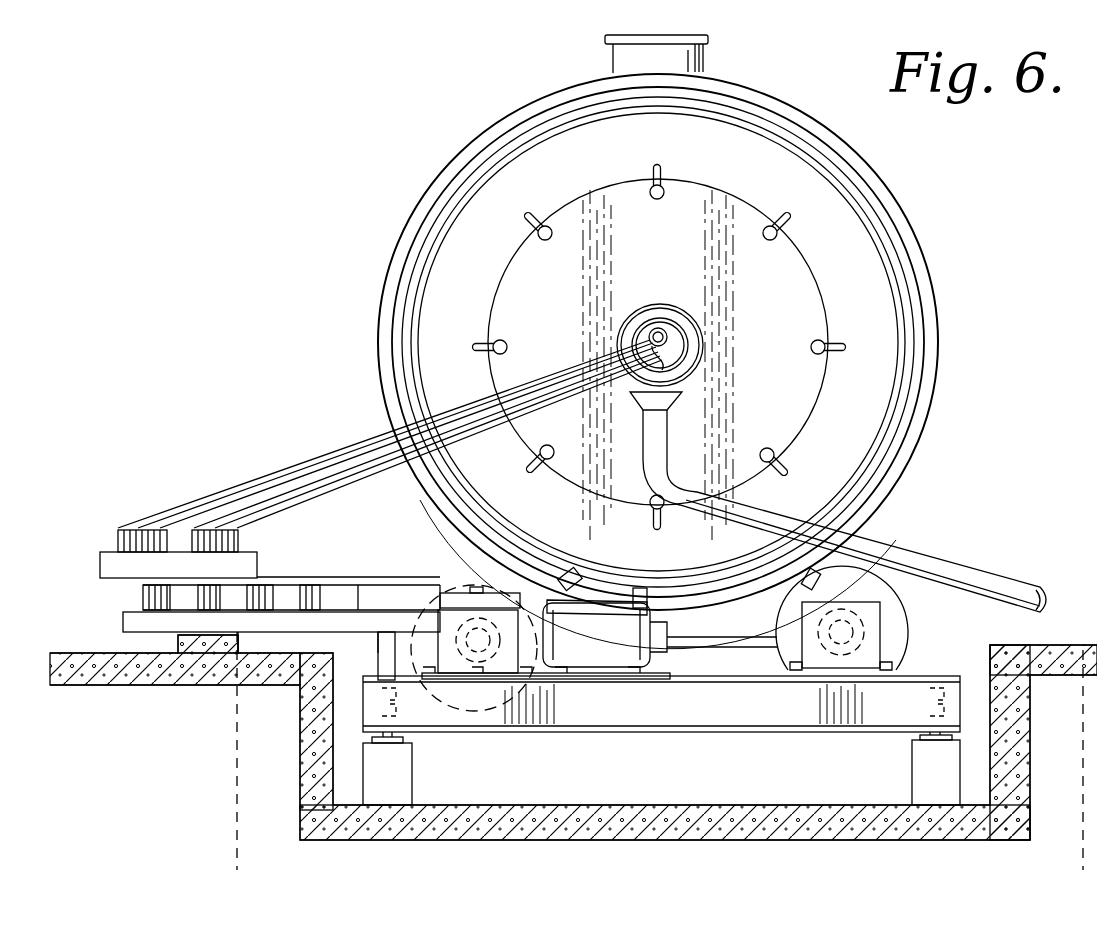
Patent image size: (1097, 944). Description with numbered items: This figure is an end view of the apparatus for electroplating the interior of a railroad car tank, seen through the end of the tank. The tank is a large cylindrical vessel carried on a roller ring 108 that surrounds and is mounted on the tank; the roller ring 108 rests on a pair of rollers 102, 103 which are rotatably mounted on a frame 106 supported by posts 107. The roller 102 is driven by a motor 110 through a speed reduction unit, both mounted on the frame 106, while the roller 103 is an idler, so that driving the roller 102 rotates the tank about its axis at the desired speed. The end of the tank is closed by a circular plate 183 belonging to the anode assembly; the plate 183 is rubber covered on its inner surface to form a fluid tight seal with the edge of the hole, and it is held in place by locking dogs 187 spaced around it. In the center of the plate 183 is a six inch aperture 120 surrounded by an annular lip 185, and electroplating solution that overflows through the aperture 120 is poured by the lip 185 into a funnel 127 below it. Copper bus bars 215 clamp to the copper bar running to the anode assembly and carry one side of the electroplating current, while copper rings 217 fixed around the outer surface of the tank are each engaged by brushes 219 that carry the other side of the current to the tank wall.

The roller 102 is at (464, 708).
The roller 103 is at (904, 624).
The frame 106 is at (690, 735).
The posts 107 is at (404, 781).
The roller ring 108 is at (905, 436).
The motor 110 is at (584, 660).
The aperture 120 is at (690, 345).
The funnel 127 is at (632, 400).
The plate 183 is at (626, 200).
The annular lip 185 is at (676, 290).
The locking dogs 187 is at (543, 224).
The copper bus bars 215 is at (284, 500).
The copper rings 217 is at (704, 606).
The brushes 219 is at (574, 580).